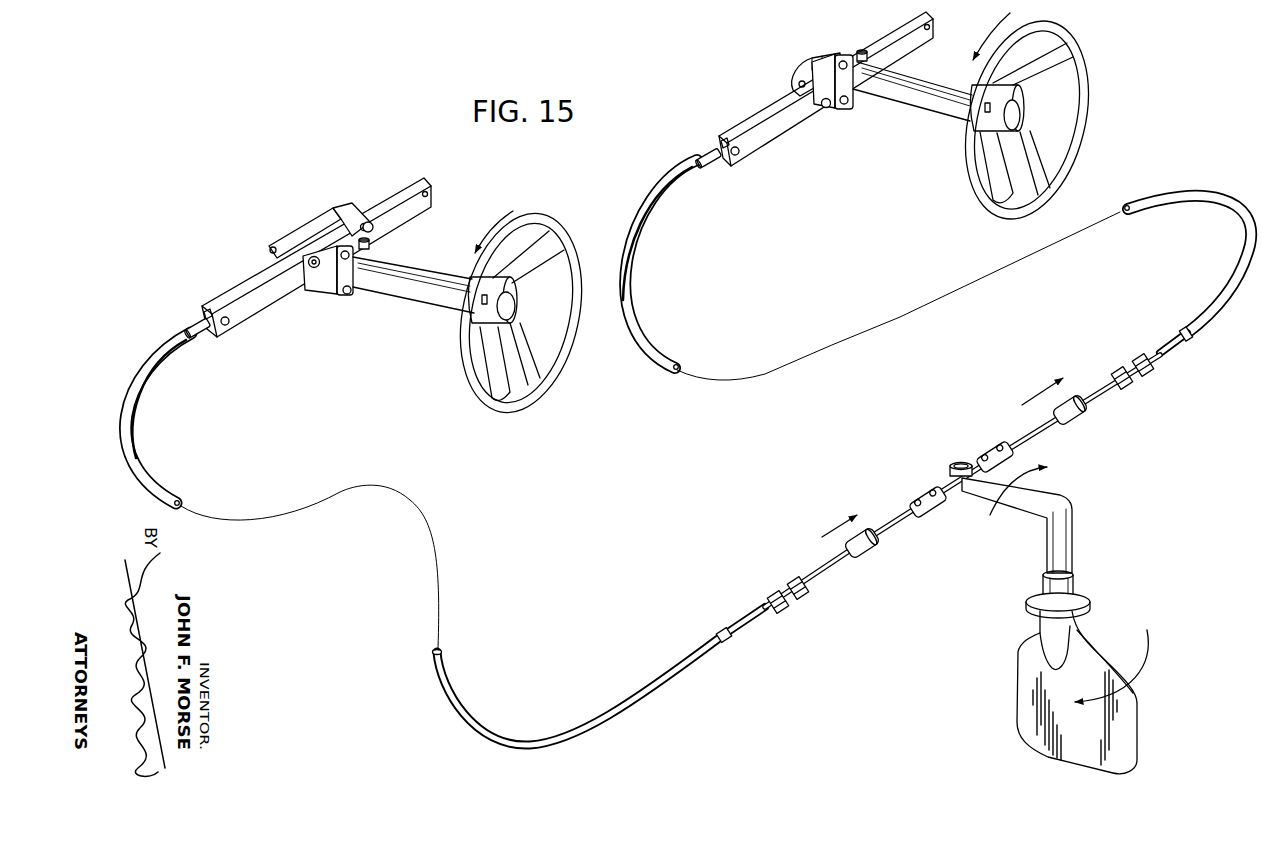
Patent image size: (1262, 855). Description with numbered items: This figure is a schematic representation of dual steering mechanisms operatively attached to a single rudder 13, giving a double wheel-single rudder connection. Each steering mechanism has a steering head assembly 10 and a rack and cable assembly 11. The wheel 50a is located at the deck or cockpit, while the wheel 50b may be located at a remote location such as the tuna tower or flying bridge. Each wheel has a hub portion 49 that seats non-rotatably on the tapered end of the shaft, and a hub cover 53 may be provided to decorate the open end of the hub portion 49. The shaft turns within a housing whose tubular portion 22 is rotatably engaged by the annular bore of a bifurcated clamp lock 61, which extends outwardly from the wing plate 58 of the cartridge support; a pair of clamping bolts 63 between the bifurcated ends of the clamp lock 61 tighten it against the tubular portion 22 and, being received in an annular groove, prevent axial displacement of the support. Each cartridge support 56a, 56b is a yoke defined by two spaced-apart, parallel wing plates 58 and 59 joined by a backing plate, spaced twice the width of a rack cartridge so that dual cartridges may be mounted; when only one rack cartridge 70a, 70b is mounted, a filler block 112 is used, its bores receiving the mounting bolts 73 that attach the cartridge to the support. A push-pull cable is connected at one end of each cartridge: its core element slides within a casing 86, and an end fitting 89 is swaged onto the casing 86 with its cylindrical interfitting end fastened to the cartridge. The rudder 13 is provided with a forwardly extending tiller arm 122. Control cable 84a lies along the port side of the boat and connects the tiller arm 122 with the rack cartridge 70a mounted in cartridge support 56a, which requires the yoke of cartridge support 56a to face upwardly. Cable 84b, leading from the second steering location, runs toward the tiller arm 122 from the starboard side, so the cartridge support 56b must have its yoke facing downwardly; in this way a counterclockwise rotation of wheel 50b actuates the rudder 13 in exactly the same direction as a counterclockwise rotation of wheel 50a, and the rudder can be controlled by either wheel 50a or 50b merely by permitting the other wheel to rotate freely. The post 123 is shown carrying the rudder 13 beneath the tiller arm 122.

The steering head assembly 10 is at (768, 227).
The rack and cable assembly 11 is at (534, 175).
The rudder 13 is at (1144, 707).
The tubular portion 22 is at (425, 292).
The hub portion 49 is at (497, 318).
The wheel 50a is at (537, 390).
The wheel 50b is at (1086, 104).
The hub cover 53 is at (512, 303).
The cartridge support 56a is at (322, 276).
The cartridge support 56b is at (838, 106).
The wing plate 58 is at (373, 228).
The wing plate 59 is at (312, 224).
The clamp lock 61 is at (380, 253).
The clamping bolts 63 is at (374, 244).
The rack cartridge 70a is at (393, 190).
The rack cartridge 70b is at (783, 130).
The mounting bolts 73 is at (310, 276).
The control cable 84a is at (440, 688).
The cable 84b is at (1208, 308).
The casing 86 is at (128, 425).
The end fitting 89 is at (190, 327).
The filler block 112 is at (344, 210).
The tiller arm 122 is at (1037, 490).
The rudder post 123 is at (1072, 535).